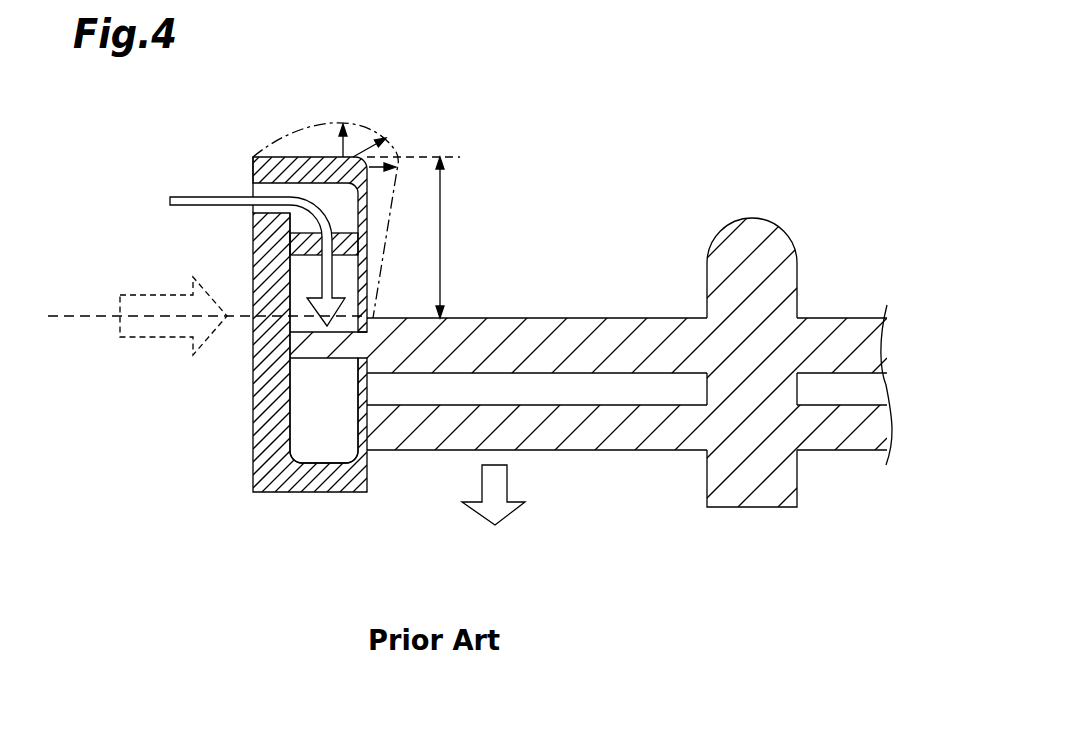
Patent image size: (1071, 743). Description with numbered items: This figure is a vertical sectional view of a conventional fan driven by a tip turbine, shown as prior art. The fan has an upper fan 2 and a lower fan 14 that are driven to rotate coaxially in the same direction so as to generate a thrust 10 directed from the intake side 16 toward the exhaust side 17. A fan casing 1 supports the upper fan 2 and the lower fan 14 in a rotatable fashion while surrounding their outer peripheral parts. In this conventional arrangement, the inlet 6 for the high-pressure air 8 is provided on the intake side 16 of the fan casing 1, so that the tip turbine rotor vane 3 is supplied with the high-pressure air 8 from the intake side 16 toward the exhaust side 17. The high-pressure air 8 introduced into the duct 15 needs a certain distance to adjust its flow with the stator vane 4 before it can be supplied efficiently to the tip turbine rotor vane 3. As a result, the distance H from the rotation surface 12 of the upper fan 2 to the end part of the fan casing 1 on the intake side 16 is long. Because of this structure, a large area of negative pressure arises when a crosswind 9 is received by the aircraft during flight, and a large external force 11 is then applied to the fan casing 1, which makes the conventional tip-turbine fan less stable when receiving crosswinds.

The fan casing 1 is at (253, 436).
The upper fan 2 is at (578, 328).
The tip turbine rotor vane 3 is at (327, 360).
The stator vane 4 is at (346, 232).
The inlet 6 is at (252, 188).
The high-pressure air 8 is at (178, 196).
The crosswind 9 is at (128, 293).
The thrust 10 is at (472, 505).
The external force 11 is at (378, 165).
The rotation surface 12 is at (62, 313).
The lower fan 14 is at (608, 450).
The duct 15 is at (303, 380).
The intake side 16 is at (695, 136).
The exhaust side 17 is at (700, 535).
The distance H is at (452, 230).